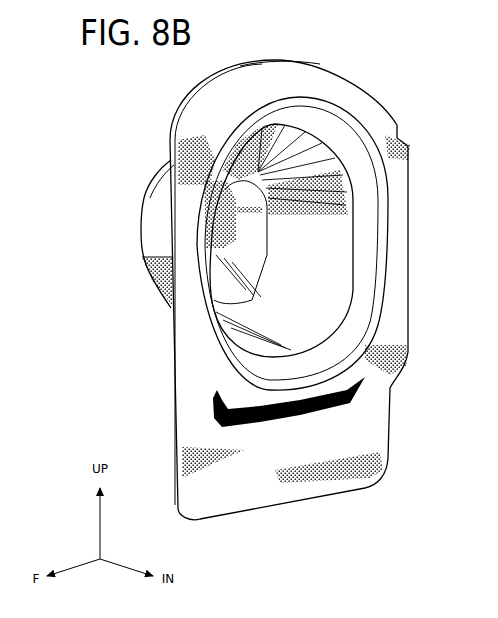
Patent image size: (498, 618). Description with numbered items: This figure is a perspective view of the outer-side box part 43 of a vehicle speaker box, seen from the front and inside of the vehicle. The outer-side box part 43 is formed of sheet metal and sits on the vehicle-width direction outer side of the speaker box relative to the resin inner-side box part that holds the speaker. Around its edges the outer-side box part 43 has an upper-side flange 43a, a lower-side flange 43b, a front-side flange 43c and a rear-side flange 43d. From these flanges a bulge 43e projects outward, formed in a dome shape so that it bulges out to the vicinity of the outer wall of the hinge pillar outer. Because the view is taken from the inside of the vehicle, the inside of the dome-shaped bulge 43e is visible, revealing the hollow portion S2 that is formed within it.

The outer-side box part 43 is at (385, 90).
The upper-side flange 43a is at (302, 77).
The lower-side flange 43b is at (262, 498).
The front-side flange 43c is at (152, 282).
The rear-side flange 43d is at (398, 230).
The bulge 43e is at (156, 176).
The hollow portion S2 is at (313, 262).